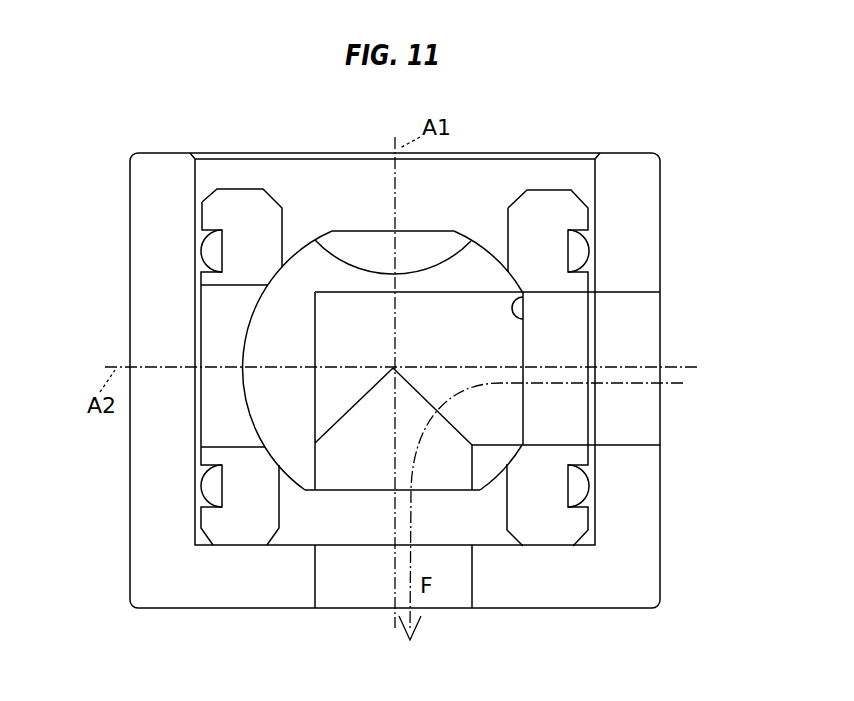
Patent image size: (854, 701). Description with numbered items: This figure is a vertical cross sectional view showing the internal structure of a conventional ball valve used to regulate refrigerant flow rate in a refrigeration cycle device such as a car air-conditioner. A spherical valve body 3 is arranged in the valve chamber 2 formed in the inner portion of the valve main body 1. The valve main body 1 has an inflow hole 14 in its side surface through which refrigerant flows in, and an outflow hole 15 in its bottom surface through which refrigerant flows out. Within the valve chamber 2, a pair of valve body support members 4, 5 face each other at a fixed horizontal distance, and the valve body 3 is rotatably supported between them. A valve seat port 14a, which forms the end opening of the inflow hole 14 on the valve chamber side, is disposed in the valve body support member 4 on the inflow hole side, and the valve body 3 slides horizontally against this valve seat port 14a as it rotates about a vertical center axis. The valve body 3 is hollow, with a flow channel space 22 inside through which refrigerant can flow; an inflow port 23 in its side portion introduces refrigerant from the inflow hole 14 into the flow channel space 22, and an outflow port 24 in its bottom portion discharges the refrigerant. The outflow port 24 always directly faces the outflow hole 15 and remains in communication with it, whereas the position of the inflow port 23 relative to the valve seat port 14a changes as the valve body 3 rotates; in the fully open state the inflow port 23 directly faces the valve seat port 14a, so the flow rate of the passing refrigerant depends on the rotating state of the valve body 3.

The valve main body 1 is at (642, 568).
The valve chamber 2 is at (512, 175).
The valve body 3 is at (252, 317).
The valve body support member 4 is at (572, 215).
The valve body support member 5 is at (222, 214).
The inflow hole 14 is at (622, 446).
The valve seat port 14a is at (523, 318).
The outflow hole 15 is at (472, 583).
The flow channel space 22 is at (345, 322).
The inflow port 23 is at (523, 347).
The outflow port 24 is at (347, 492).